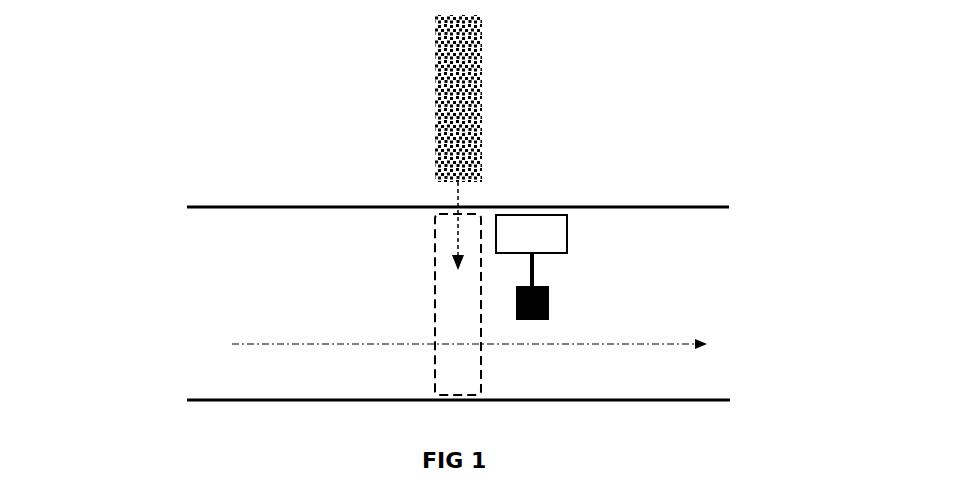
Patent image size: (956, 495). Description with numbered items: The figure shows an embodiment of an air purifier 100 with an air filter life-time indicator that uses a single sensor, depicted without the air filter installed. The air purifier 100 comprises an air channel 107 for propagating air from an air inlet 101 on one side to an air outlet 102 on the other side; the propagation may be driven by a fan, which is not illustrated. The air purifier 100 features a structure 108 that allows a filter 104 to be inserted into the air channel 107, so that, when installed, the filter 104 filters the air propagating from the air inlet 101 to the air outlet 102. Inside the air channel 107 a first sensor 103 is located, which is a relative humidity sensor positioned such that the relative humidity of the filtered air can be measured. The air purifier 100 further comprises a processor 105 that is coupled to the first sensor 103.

The air purifier 100 is at (131, 186).
The air inlet 101 is at (208, 299).
The air outlet 102 is at (718, 287).
The first sensor 103 is at (550, 293).
The filter 104 is at (435, 62).
The processor 105 is at (567, 217).
The air channel 107 is at (680, 207).
The structure 108 is at (434, 291).